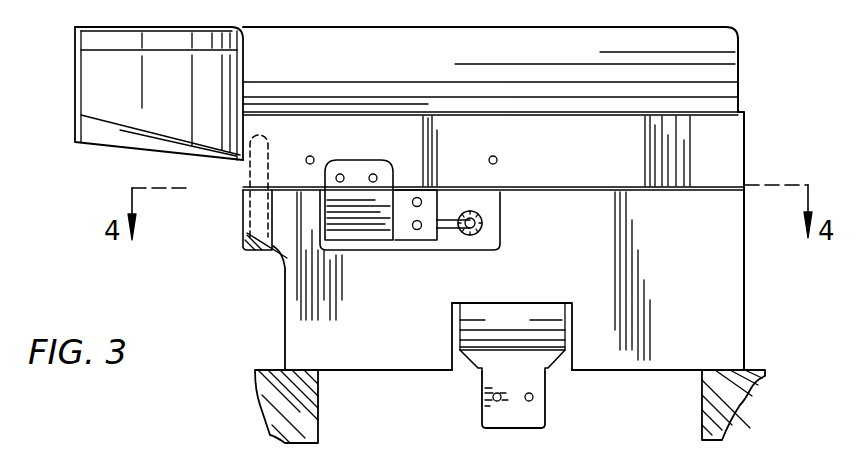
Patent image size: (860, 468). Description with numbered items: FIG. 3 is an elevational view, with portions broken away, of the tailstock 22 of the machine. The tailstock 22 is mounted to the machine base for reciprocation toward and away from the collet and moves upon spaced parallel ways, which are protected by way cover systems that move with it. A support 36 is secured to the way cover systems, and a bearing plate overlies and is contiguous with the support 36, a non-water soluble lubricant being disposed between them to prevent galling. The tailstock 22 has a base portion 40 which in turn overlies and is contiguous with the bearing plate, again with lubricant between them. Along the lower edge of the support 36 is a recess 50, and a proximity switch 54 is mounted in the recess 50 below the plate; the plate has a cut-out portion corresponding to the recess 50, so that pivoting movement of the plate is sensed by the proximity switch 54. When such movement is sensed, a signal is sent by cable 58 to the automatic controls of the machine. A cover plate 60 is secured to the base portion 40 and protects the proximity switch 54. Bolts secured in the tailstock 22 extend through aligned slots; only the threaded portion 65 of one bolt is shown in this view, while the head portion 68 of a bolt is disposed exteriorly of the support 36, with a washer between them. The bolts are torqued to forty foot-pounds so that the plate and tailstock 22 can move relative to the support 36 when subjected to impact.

The tailstock 22 is at (725, 152).
The base portion 40 is at (612, 140).
The threaded portion 65 is at (263, 153).
The head portion 68 is at (250, 260).
The cover plate 60 is at (360, 172).
The proximity switch 54 is at (428, 228).
The cable 58 is at (448, 230).
The recess 50 is at (480, 210).
The support 36 is at (700, 278).